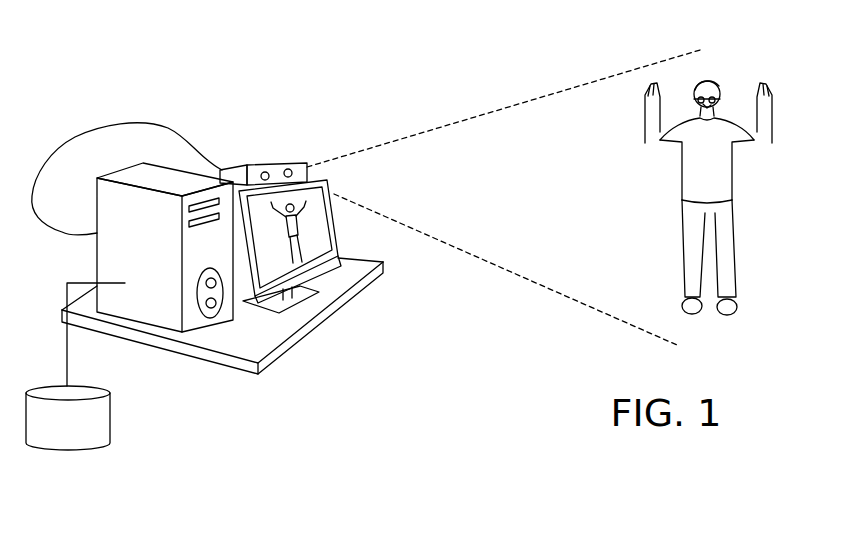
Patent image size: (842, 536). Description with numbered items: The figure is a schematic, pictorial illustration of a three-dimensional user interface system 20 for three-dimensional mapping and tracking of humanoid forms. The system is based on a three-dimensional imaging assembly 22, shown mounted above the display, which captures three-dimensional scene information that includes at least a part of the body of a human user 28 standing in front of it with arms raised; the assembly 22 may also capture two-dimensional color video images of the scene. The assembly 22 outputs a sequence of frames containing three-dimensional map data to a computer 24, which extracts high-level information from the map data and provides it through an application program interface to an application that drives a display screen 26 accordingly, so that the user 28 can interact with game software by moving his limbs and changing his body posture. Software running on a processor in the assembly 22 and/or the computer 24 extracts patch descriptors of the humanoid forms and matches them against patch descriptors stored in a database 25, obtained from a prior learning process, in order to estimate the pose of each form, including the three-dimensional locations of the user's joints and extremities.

The 3D user interface system 20 is at (178, 53).
The 3D imaging assembly 22 is at (280, 164).
The computer 24 is at (148, 316).
The database 25 is at (72, 452).
The display screen 26 is at (320, 262).
The human user 28 is at (723, 81).